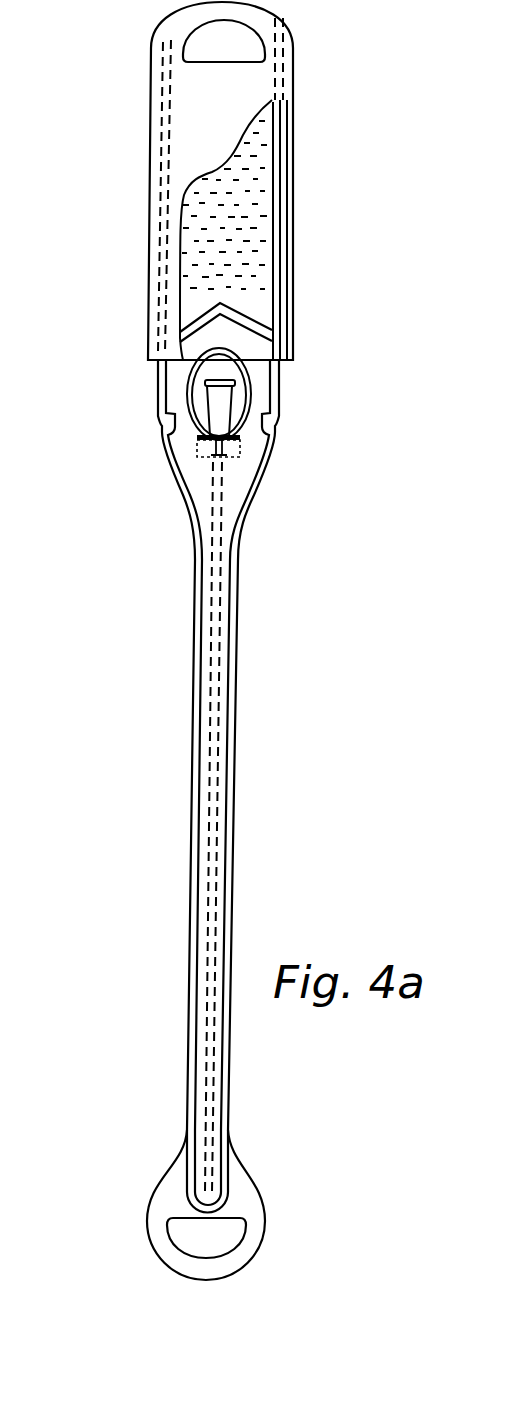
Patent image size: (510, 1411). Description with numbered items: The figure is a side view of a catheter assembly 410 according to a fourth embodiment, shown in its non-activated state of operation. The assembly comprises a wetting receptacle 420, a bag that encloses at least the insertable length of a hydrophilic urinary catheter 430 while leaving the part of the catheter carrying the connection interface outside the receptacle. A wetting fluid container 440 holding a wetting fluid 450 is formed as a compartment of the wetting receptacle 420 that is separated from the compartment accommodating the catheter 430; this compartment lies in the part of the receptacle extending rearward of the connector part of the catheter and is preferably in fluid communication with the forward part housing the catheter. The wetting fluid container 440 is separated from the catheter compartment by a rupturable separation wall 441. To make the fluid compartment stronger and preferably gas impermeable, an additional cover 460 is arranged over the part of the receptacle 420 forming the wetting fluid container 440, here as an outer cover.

The catheter assembly 410 is at (142, 268).
The wetting receptacle 420 is at (257, 482).
The urinary catheter 430 is at (216, 886).
The wetting fluid container 440 is at (266, 192).
The rupturable separation wall 441 is at (243, 313).
The wetting fluid 450 is at (273, 158).
The additional cover 460 is at (293, 103).